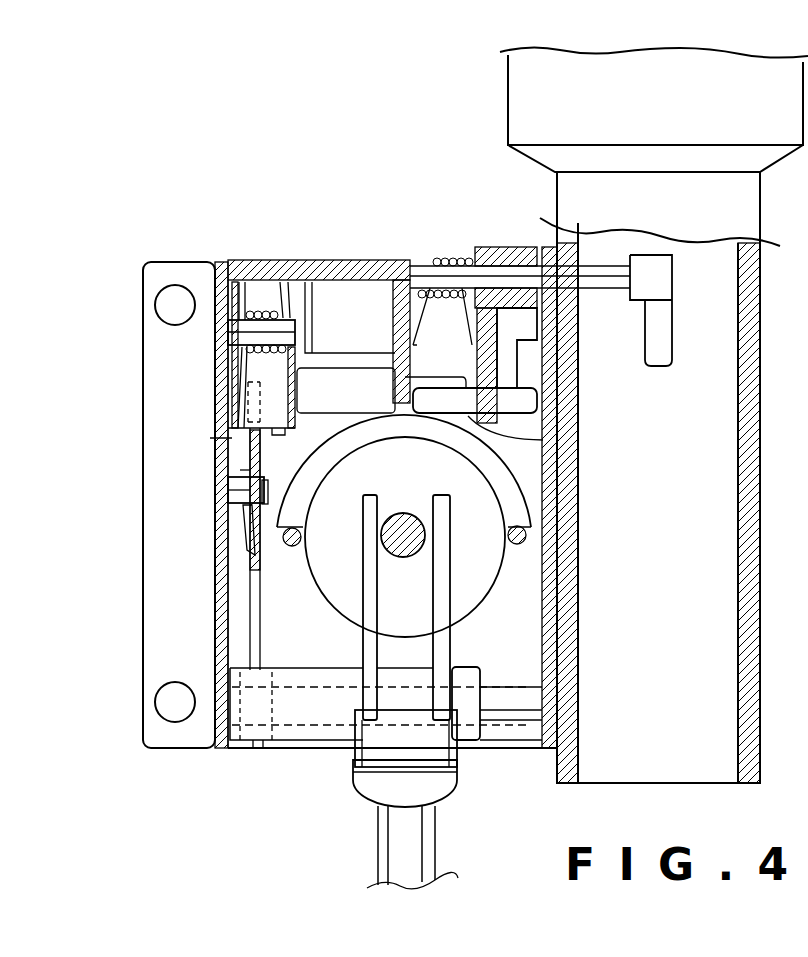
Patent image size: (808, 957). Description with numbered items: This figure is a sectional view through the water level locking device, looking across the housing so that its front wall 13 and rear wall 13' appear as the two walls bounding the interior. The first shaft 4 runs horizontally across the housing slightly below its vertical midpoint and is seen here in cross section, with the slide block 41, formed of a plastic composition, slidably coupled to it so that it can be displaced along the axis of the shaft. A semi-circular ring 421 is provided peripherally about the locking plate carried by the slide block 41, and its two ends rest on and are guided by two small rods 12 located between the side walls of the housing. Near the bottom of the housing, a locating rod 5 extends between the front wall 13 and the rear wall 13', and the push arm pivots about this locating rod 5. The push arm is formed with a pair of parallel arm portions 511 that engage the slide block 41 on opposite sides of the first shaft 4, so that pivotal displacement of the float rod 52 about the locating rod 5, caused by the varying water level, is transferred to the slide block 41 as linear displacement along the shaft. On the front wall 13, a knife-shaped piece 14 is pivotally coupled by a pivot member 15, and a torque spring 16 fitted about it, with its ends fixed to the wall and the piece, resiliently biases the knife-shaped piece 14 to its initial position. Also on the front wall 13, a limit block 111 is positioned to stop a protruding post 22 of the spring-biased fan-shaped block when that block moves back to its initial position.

The first shaft 4 is at (405, 518).
The locating rod 5 is at (528, 695).
The small rods 12 is at (291, 547).
The front wall 13 is at (346, 539).
The rear wall 13' is at (532, 532).
The knife-shaped piece 14 is at (268, 572).
The pivot member 15 is at (228, 492).
The torque spring 16 is at (243, 540).
The protruding post 22 is at (480, 428).
The slide block 41 is at (470, 605).
The float rod 52 is at (390, 850).
The limit block 111 is at (535, 368).
The semi-circular ring 421 is at (510, 505).
The parallel arm portions 511 is at (372, 596).